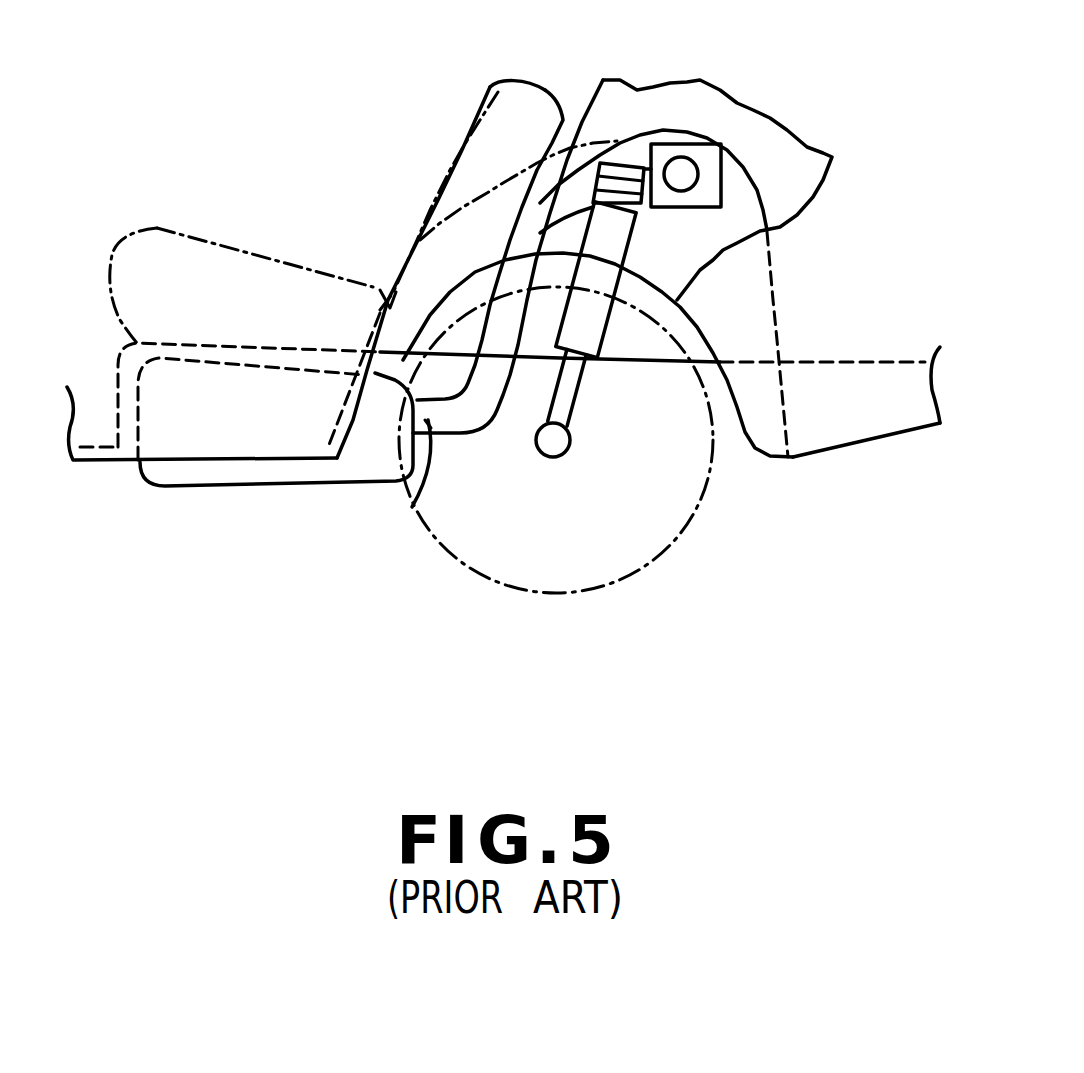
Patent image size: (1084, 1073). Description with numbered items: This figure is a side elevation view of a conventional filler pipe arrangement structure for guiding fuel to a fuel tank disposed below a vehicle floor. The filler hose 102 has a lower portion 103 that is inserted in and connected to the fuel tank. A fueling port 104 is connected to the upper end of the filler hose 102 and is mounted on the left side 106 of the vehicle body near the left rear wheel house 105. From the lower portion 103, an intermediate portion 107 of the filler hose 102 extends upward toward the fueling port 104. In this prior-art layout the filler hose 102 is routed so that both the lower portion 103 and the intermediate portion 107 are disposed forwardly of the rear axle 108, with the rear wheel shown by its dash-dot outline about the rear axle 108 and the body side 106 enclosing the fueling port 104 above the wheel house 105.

The filler hose 102 is at (543, 233).
The lower portion 103 is at (412, 507).
The fueling port 104 is at (697, 154).
The left rear wheel house 105 is at (692, 325).
The left side 106 is at (740, 146).
The intermediate portion 107 is at (514, 331).
The rear axle 108 is at (553, 457).